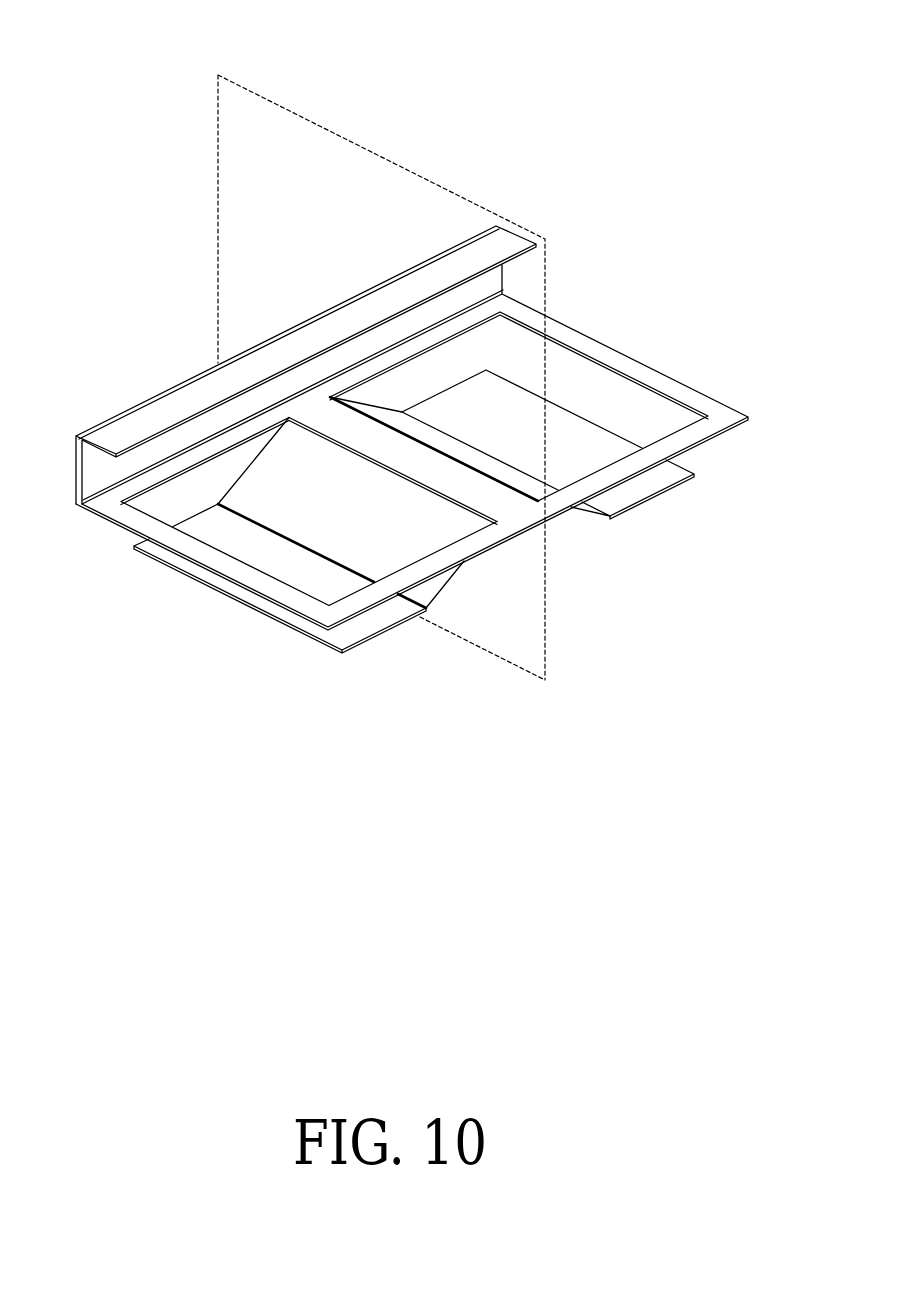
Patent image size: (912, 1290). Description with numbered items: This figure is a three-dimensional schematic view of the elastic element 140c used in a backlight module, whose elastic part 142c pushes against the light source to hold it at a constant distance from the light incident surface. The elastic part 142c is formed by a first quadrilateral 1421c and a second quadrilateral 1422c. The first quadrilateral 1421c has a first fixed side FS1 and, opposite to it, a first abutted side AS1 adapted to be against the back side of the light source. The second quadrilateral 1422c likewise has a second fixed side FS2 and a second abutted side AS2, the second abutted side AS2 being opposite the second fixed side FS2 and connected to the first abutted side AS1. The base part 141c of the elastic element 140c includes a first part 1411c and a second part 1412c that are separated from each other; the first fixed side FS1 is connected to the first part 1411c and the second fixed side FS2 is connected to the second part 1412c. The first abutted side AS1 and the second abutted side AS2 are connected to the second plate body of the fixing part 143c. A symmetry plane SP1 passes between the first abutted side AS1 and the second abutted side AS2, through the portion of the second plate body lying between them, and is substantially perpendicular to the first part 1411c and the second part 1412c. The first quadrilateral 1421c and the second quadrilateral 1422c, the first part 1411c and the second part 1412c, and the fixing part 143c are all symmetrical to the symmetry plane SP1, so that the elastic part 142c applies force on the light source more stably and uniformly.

The elastic element 140c is at (95, 33).
The symmetry plane SP1 is at (294, 108).
The fixing part 143c is at (330, 423).
The first abutted side AS1 is at (310, 427).
The second abutted side AS2 is at (373, 420).
The elastic part 142c is at (509, 523).
The first quadrilateral 1421c is at (423, 523).
The second quadrilateral 1422c is at (515, 476).
The base part 141c is at (416, 592).
The first part 1411c is at (372, 623).
The second part 1412c is at (690, 468).
The first fixed side FS1 is at (428, 608).
The second fixed side FS2 is at (612, 517).